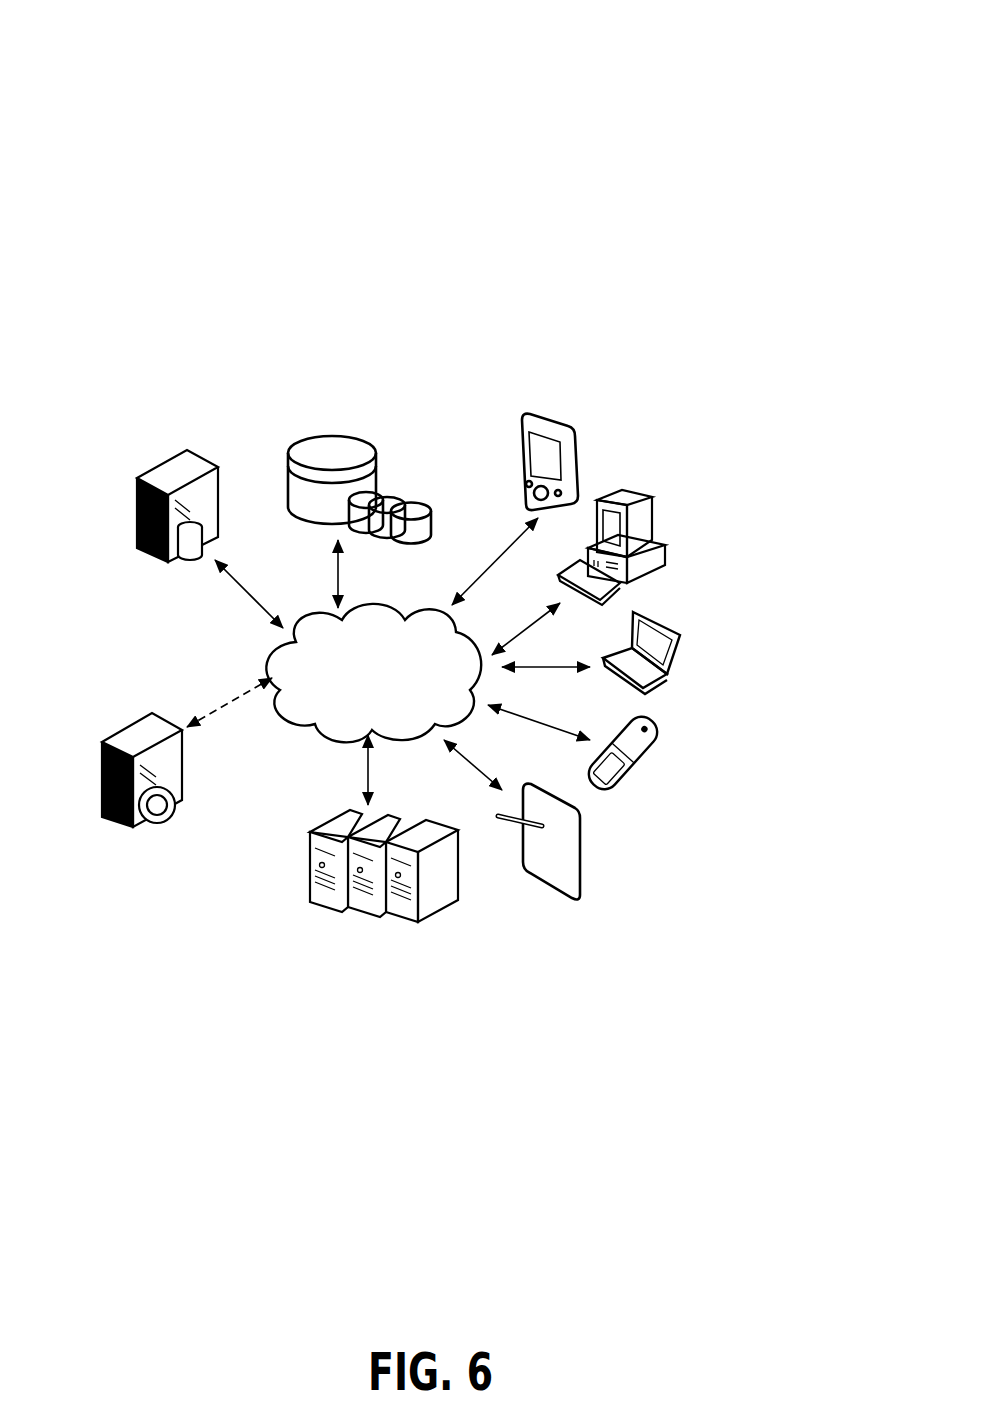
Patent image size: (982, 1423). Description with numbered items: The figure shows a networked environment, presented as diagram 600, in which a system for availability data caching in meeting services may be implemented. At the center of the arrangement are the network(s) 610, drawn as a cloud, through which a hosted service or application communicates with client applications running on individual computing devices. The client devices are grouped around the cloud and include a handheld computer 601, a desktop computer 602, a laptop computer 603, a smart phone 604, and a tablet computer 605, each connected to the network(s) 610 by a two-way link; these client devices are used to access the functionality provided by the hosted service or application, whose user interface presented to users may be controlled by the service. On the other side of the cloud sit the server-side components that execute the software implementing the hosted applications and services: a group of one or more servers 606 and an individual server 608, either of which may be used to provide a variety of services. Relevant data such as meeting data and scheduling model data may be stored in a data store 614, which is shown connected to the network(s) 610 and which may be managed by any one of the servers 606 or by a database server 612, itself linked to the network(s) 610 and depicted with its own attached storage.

The diagram 600 is at (708, 33).
The handheld computer 601 is at (582, 416).
The desktop computer 602 is at (664, 506).
The laptop computer 603 is at (682, 610).
The smart phone 604 is at (652, 720).
The tablet computer 605 is at (592, 828).
The servers 606 is at (335, 812).
The individual server 608 is at (120, 722).
The network(s) 610 is at (373, 598).
The database server 612 is at (190, 568).
The data store 614 is at (345, 418).